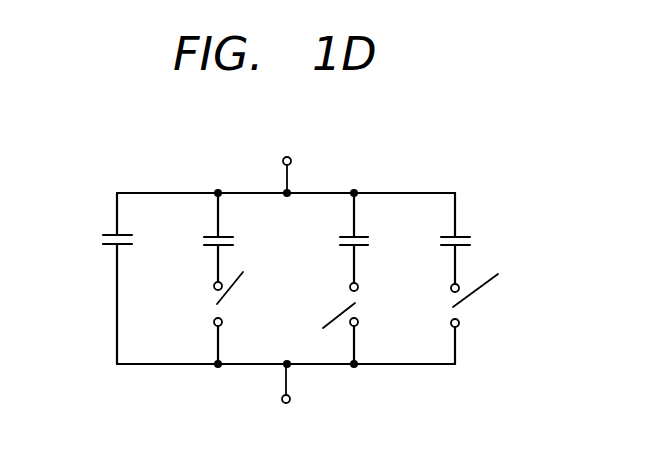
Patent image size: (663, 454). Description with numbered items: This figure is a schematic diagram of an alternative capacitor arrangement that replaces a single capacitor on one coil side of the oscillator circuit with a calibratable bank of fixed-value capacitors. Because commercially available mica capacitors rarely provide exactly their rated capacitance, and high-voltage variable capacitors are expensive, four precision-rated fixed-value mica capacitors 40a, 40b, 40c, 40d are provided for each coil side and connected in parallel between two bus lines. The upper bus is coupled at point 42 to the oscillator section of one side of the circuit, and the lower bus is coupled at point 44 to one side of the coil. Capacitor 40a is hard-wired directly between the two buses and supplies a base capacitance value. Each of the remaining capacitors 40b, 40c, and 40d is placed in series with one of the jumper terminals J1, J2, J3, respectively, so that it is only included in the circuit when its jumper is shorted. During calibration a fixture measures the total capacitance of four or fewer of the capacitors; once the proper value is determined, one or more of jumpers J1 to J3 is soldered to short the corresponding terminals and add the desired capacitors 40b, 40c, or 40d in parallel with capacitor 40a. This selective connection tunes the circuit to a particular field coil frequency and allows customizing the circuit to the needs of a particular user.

The fixed-value mica capacitor 40a is at (108, 247).
The fixed-value mica capacitor 40b is at (218, 228).
The fixed-value mica capacitor 40c is at (353, 236).
The fixed-value mica capacitor 40d is at (463, 238).
The jumper terminal J1 is at (243, 272).
The jumper terminal J2 is at (323, 328).
The jumper terminal J3 is at (498, 274).
The point 42 is at (290, 158).
The point 44 is at (288, 403).